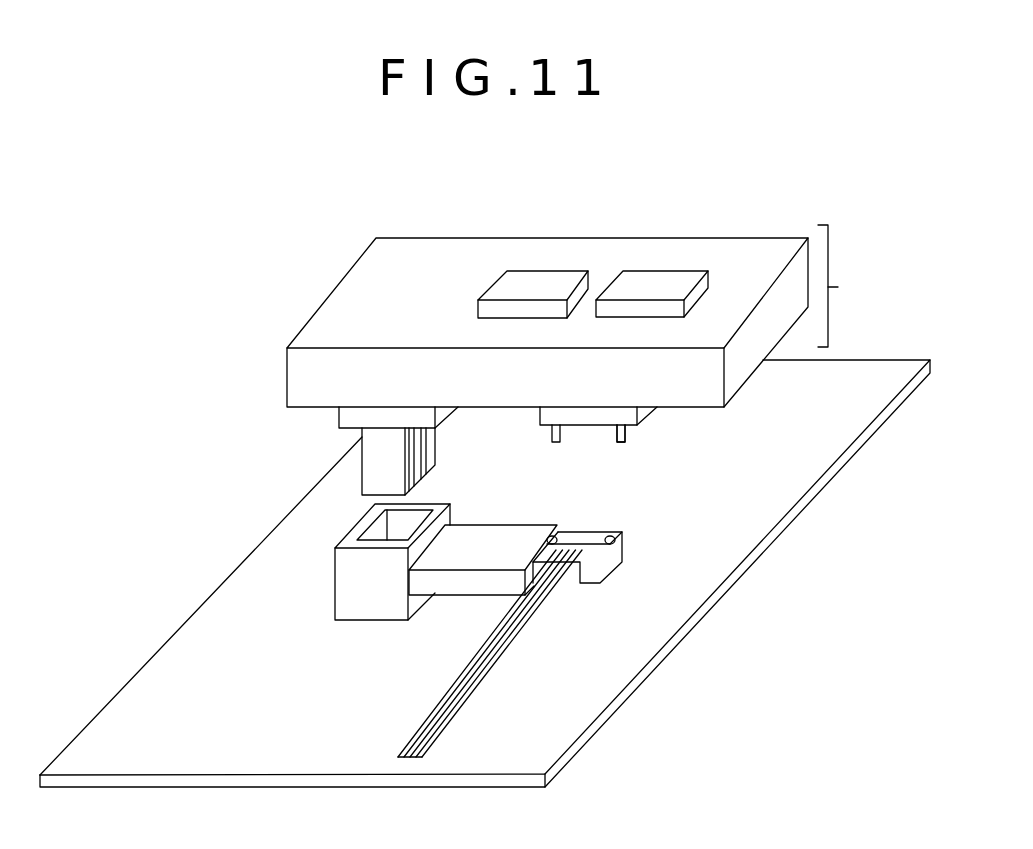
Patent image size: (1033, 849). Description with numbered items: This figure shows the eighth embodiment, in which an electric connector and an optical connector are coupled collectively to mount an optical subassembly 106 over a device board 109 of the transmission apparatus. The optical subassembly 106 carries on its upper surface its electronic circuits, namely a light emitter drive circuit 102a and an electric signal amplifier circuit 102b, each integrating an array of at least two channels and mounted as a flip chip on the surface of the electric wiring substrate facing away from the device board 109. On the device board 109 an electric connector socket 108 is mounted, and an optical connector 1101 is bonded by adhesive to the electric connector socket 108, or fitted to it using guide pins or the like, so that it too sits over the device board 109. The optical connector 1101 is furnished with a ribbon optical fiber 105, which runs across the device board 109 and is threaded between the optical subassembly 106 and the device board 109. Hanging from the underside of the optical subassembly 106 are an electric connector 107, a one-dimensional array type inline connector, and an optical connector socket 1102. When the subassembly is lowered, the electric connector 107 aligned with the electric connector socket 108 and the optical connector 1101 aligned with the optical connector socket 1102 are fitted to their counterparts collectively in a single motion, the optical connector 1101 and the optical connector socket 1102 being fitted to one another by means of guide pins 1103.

The light emitter drive circuit 102a is at (667, 273).
The electric signal amplifier circuit 102b is at (537, 273).
The ribbon optical fiber 105 is at (500, 653).
The optical subassembly 106 is at (850, 283).
The electric connector 107 is at (362, 453).
The electric connector socket 108 is at (335, 583).
The device board 109 is at (766, 510).
The optical connector 1101 is at (505, 547).
The optical connector socket 1102 is at (628, 421).
The guide pins 1103 is at (606, 443).